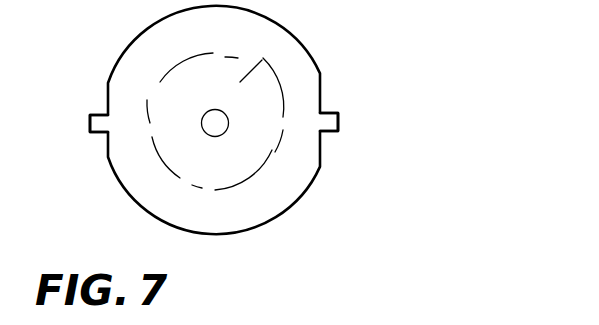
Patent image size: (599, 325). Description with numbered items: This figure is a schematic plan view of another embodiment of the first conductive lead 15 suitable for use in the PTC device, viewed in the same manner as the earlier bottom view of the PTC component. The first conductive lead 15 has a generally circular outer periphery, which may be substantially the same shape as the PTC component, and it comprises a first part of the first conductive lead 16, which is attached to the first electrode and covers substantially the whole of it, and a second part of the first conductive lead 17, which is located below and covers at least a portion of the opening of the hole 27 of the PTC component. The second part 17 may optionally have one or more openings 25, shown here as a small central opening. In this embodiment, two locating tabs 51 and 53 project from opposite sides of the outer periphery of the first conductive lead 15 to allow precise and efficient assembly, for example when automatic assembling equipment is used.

The first conductive lead 15 is at (393, 0).
The first part of the first conductive lead 16 is at (295, 93).
The second part of the first conductive lead 17 is at (263, 58).
The opening 25 is at (215, 123).
The hole 27 is at (238, 164).
The locating tab 51 is at (95, 125).
The locating tab 53 is at (333, 121).